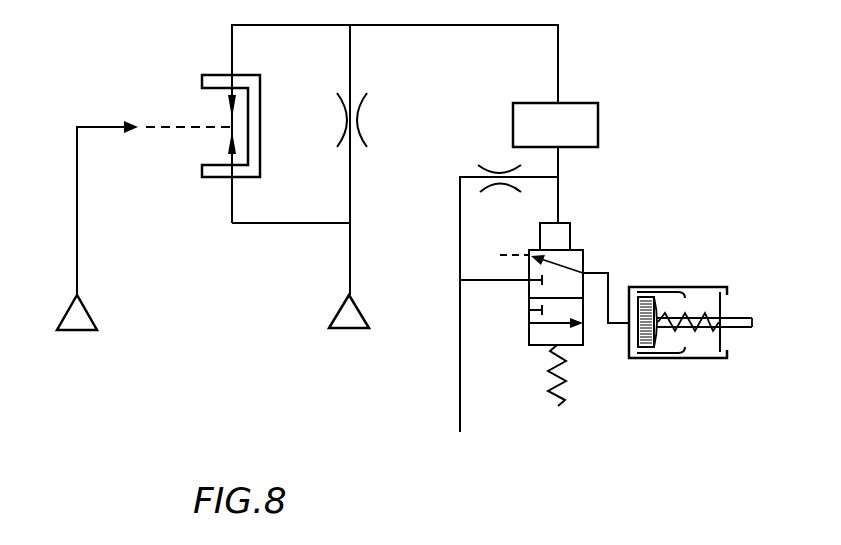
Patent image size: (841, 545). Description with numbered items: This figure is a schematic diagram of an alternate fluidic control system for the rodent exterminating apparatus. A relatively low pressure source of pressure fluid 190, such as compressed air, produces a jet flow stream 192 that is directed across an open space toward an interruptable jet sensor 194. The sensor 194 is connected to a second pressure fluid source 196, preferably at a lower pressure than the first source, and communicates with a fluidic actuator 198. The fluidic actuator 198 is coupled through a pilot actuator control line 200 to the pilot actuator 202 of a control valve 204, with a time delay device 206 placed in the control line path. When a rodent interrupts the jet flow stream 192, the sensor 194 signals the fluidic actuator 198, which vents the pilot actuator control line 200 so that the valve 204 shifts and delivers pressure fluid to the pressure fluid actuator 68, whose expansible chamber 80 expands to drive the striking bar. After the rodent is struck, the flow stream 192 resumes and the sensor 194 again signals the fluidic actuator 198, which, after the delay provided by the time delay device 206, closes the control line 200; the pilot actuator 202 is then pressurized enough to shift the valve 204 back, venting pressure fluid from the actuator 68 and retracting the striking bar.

The pressure fluid actuator 68 is at (667, 270).
The expansible chamber 80 is at (662, 353).
The pressure fluid source 190 is at (83, 332).
The jet flow stream 192 is at (174, 122).
The interruptable jet sensor 194 is at (262, 97).
The pressure fluid source 196 is at (355, 330).
The fluidic actuator 198 is at (572, 103).
The pilot actuator control line 200 is at (561, 163).
The pilot actuator 202 is at (573, 228).
The control valve 204 is at (587, 337).
The time delay device 206 is at (492, 173).